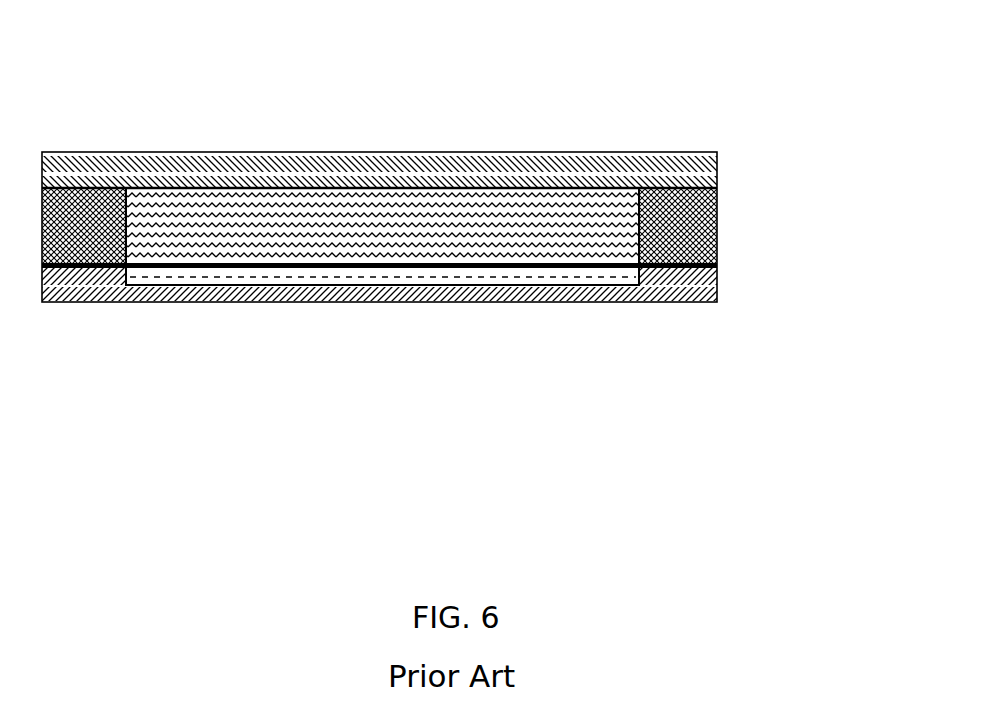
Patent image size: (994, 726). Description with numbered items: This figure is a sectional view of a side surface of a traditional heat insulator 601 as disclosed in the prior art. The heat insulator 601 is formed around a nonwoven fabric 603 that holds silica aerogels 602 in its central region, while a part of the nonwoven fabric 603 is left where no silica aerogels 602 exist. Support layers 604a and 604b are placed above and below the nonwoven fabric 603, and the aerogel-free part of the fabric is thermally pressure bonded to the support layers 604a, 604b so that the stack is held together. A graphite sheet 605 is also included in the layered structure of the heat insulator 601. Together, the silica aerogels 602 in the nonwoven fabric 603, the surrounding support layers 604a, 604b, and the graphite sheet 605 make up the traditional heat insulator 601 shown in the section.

The heat insulator 601 is at (822, 186).
The silica aerogel 602 is at (610, 227).
The nonwoven fabric 603 is at (706, 243).
The support layer 604a is at (433, 302).
The support layer 604b is at (430, 152).
The graphite sheet 605 is at (215, 275).